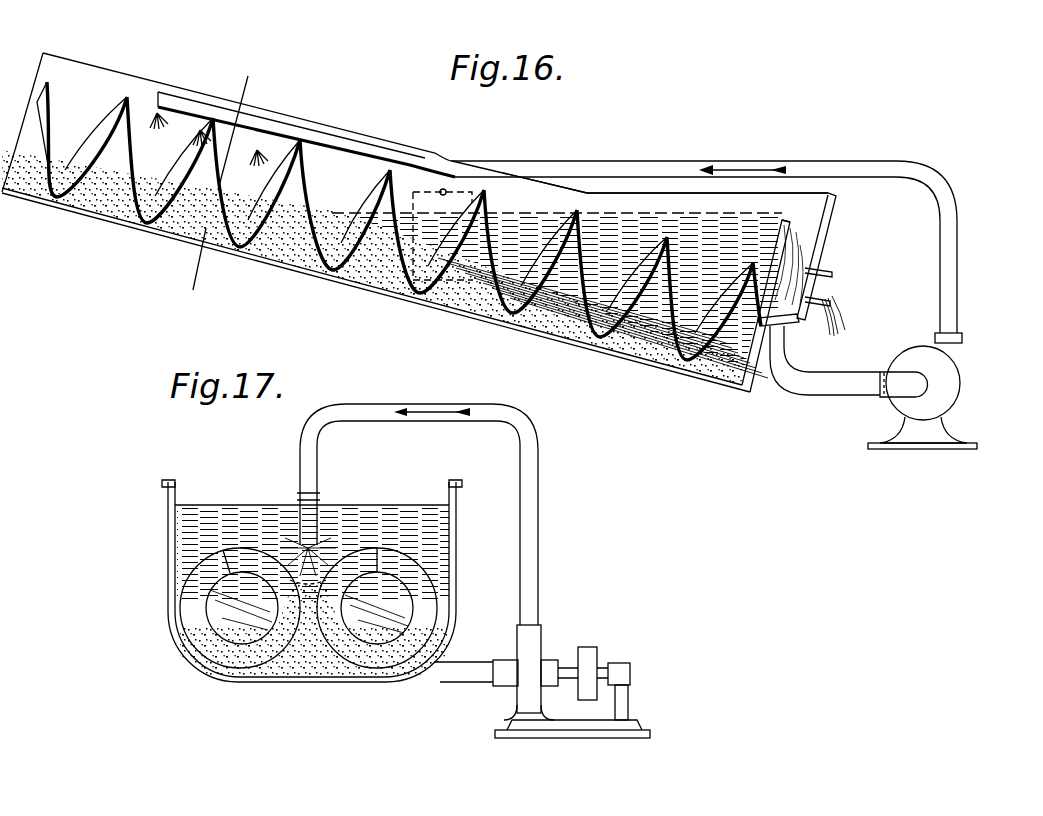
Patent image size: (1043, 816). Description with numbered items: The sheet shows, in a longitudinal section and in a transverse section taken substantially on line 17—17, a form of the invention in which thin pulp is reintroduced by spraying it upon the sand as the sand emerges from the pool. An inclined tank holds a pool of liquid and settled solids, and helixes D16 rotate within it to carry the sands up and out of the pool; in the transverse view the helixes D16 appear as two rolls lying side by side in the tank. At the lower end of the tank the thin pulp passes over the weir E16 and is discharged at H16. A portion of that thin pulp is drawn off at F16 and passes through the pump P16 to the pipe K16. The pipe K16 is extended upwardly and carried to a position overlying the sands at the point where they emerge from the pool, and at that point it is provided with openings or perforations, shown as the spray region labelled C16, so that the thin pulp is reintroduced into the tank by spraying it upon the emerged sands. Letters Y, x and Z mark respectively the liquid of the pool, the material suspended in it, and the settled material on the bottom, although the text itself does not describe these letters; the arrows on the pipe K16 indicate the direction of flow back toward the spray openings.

In FIG. 16, the helixes D16 is at (349, 115).
In FIG. 17, the helixes D16 is at (453, 553).
In FIG. 16, the perforated spray chute C16 is at (447, 189).
In FIG. 16, the pipe K16 is at (681, 162).
In FIG. 17, the pipe K16 is at (320, 457).
In FIG. 16, the weir E16 is at (788, 222).
In FIG. 17, the weir E16 is at (243, 505).
In FIG. 16, the discharge H16 is at (826, 278).
In FIG. 16, the draw-off F16 is at (788, 340).
In FIG. 16, the pump P16 is at (947, 388).
In FIG. 17, the pump P16 is at (535, 668).
In FIG. 16, the section line 17- 17 is at (265, 84).
In FIG. 16, the liquid Y is at (673, 230).
In FIG. 17, the liquid Y is at (299, 520).
In FIG. 16, the suspended material x is at (665, 316).
In FIG. 17, the suspended material x is at (309, 618).
In FIG. 16, the settled sediment Z is at (550, 326).
In FIG. 17, the settled sediment Z is at (303, 655).